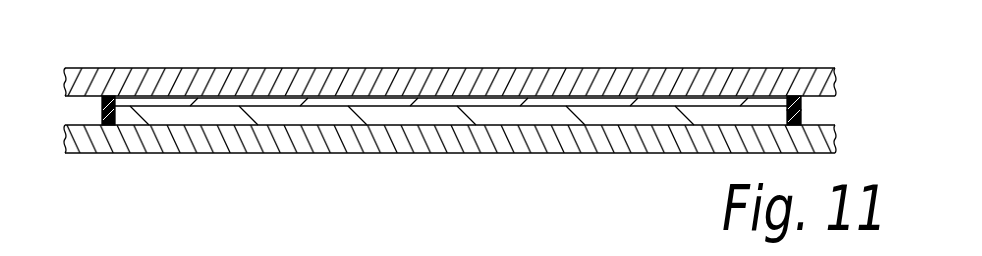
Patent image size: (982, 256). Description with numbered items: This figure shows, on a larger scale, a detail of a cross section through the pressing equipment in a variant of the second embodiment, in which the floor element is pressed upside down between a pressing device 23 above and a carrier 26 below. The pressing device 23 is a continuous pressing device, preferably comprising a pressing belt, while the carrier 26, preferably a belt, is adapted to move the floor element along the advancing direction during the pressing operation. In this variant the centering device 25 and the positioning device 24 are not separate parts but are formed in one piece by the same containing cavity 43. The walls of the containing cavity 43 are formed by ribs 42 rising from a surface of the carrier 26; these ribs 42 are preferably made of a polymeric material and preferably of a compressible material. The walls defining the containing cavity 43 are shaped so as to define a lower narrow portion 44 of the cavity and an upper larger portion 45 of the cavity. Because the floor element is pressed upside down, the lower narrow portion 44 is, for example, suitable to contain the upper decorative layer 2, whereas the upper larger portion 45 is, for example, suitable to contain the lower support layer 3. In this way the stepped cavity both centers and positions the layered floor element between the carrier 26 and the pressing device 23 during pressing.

The upper decorative layer 2 is at (165, 122).
The lower support layer 3 is at (148, 101).
The pressing device 23 is at (815, 87).
The positioning device 24 is at (802, 108).
The centering device 25 is at (802, 101).
The carrier 26 is at (615, 151).
The ribs 42 is at (100, 113).
The containing cavity 43 is at (627, 110).
The lower narrow portion 44 is at (420, 122).
The upper larger portion 45 is at (472, 95).